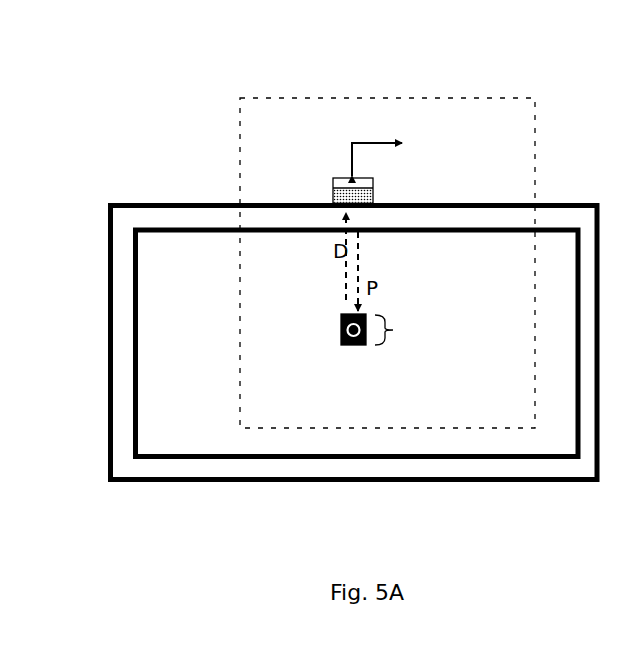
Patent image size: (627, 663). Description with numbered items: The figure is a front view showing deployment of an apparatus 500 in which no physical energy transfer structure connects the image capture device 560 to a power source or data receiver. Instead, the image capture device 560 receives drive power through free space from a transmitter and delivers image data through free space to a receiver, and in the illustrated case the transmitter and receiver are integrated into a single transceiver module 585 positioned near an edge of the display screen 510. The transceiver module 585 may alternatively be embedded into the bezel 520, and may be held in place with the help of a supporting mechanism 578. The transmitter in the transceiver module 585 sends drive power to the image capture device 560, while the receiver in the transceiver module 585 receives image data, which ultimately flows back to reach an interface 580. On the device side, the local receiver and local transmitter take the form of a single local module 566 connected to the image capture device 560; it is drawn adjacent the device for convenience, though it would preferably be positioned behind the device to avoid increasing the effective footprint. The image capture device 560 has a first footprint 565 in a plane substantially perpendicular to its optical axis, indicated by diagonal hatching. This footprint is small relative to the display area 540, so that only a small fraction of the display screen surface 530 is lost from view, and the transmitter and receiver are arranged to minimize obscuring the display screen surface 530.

The apparatus 500 is at (285, 98).
The display screen 510 is at (118, 204).
The bezel 520 is at (177, 218).
The display screen surface 530 is at (220, 245).
The display area 540 is at (133, 305).
The image capture device 560 is at (357, 347).
The first footprint 565 is at (401, 344).
The local module 566 is at (340, 318).
The supporting mechanism 578 is at (373, 185).
The interface 580 is at (378, 145).
The transceiver module 585 is at (379, 195).